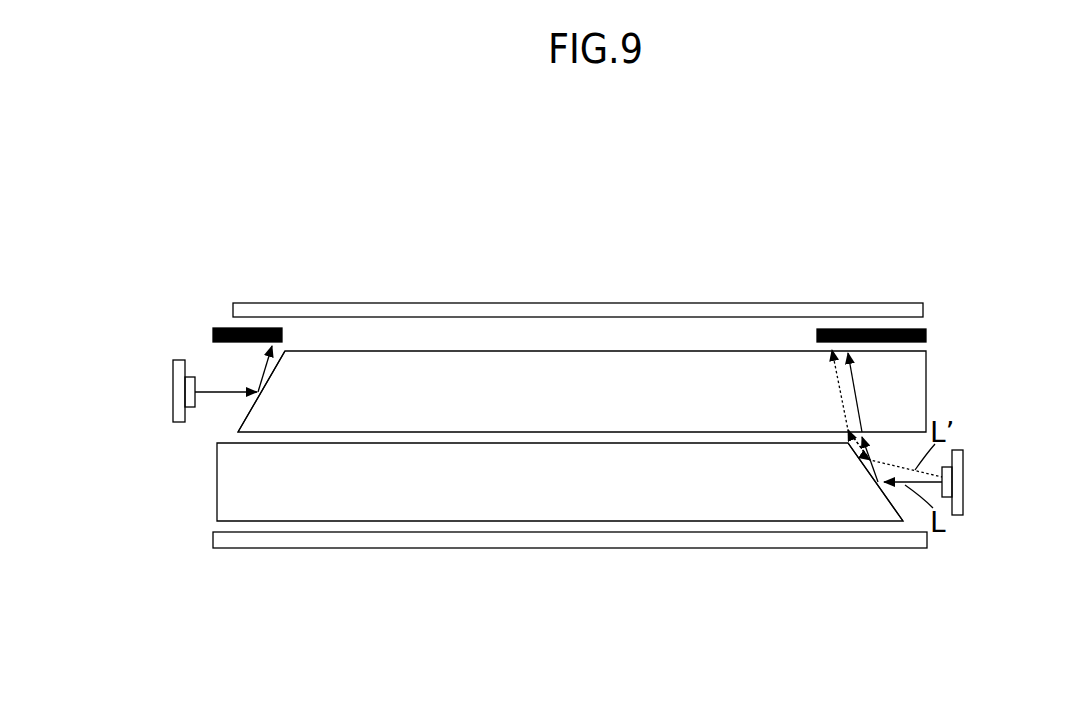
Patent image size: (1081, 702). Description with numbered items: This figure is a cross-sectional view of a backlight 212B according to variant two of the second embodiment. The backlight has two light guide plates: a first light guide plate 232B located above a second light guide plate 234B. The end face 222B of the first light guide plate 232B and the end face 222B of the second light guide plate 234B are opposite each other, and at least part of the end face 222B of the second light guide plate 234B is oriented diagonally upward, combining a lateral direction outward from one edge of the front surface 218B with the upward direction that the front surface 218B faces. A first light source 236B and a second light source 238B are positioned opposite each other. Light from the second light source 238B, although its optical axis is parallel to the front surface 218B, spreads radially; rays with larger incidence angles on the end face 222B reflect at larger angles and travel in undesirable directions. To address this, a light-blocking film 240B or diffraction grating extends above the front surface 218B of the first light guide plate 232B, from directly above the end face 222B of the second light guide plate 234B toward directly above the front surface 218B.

The backlight 212B is at (984, 288).
The light-blocking film 240B is at (900, 326).
The front surface 218B is at (415, 349).
The first light guide plate 232B is at (533, 367).
The second light guide plate 234B is at (548, 508).
The end face 222B is at (250, 410).
The first light source 236B is at (172, 398).
The second light source 238B is at (965, 482).